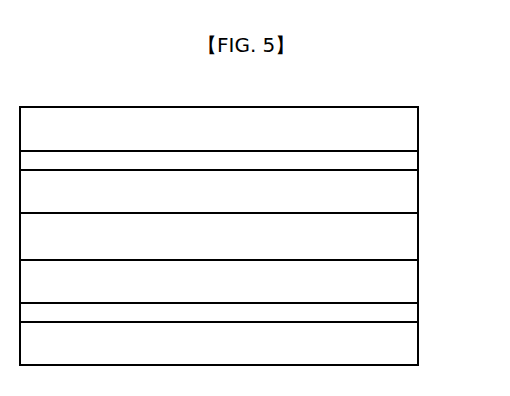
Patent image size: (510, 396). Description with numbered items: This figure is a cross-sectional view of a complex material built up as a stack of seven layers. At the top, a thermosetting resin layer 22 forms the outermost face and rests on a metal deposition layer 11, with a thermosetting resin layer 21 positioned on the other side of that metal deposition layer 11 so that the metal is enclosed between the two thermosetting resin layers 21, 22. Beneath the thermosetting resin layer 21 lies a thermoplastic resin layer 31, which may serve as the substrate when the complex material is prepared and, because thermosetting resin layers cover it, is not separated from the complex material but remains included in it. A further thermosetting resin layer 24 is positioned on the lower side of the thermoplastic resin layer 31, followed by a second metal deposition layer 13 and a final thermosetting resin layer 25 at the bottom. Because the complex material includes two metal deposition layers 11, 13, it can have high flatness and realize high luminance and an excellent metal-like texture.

The thermosetting resin layer 22 is at (408, 126).
The metal deposition layer 11 is at (408, 156).
The thermosetting resin layer 21 is at (408, 192).
The thermoplastic resin layer 31 is at (408, 240).
The thermosetting resin layer 24 is at (408, 284).
The metal deposition layer 13 is at (408, 311).
The thermosetting resin layer 25 is at (408, 345).